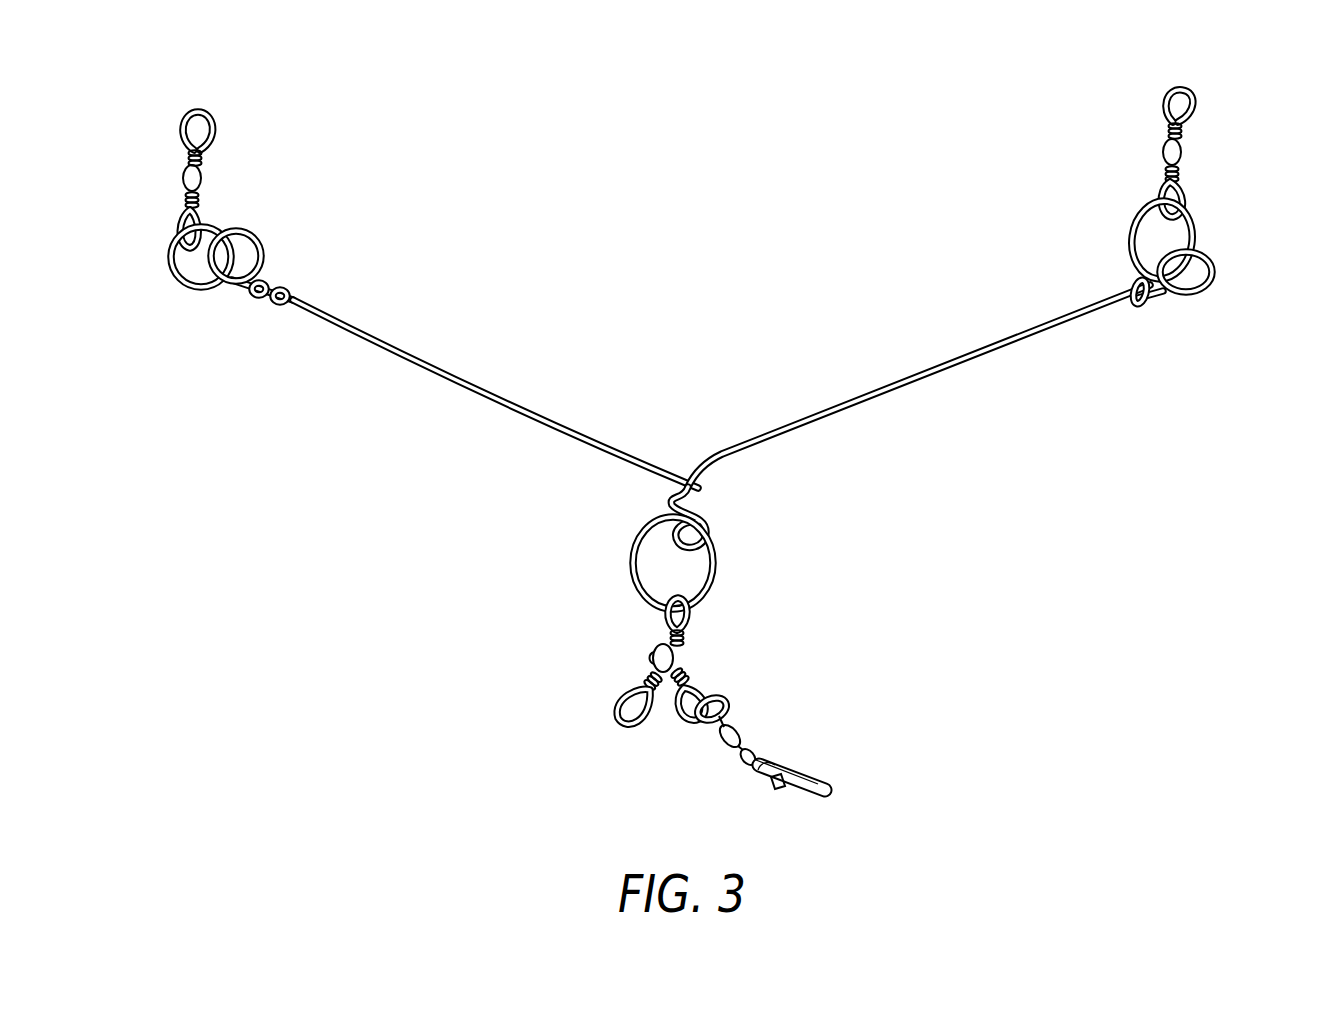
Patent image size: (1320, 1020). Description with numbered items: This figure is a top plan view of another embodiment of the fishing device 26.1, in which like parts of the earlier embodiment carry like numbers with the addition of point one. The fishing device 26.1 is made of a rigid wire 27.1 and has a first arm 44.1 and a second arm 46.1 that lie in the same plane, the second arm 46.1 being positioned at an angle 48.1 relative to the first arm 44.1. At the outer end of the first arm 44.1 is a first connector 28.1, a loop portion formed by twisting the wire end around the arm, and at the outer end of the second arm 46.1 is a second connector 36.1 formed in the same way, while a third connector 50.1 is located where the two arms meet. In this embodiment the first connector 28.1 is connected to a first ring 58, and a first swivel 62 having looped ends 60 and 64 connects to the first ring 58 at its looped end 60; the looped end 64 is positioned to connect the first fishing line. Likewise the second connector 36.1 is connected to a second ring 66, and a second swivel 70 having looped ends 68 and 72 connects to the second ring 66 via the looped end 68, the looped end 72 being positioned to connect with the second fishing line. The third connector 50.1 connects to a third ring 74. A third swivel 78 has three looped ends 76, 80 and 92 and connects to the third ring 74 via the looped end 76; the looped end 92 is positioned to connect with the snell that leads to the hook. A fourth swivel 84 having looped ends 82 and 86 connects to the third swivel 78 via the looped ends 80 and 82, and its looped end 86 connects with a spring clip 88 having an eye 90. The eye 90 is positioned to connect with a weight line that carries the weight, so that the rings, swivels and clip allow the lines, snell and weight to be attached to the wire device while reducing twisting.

The fishing device 26.1 is at (530, 237).
The rigid wire 27.1 is at (495, 394).
The first connector 28.1 is at (233, 292).
The second connector 36.1 is at (1216, 279).
The first arm 44.1 is at (452, 376).
The second arm 46.1 is at (941, 367).
The angle 48.1 is at (718, 448).
The third connector 50.1 is at (721, 528).
The first ring 58 is at (170, 262).
The looped end 60 is at (178, 232).
The first swivel 62 is at (170, 173).
The looped end 64 is at (190, 114).
The second ring 66 is at (1193, 233).
The looped end 68 is at (1187, 198).
The second swivel 70 is at (1198, 148).
The looped end 72 is at (1180, 90).
The third ring 74 is at (714, 582).
The looped end 76 is at (692, 622).
The third swivel 78 is at (641, 647).
The looped end 80 is at (698, 688).
The looped end 82 is at (727, 700).
The fourth swivel 84 is at (719, 745).
The looped end 86 is at (754, 748).
The spring clip 88 is at (764, 789).
The eye 90 is at (833, 783).
The looped end 92 is at (613, 707).